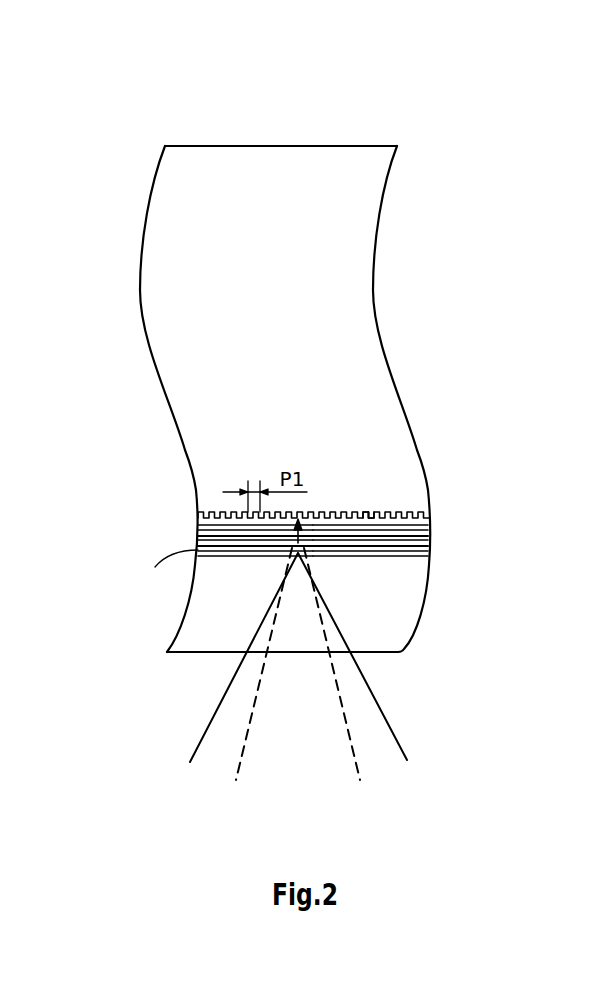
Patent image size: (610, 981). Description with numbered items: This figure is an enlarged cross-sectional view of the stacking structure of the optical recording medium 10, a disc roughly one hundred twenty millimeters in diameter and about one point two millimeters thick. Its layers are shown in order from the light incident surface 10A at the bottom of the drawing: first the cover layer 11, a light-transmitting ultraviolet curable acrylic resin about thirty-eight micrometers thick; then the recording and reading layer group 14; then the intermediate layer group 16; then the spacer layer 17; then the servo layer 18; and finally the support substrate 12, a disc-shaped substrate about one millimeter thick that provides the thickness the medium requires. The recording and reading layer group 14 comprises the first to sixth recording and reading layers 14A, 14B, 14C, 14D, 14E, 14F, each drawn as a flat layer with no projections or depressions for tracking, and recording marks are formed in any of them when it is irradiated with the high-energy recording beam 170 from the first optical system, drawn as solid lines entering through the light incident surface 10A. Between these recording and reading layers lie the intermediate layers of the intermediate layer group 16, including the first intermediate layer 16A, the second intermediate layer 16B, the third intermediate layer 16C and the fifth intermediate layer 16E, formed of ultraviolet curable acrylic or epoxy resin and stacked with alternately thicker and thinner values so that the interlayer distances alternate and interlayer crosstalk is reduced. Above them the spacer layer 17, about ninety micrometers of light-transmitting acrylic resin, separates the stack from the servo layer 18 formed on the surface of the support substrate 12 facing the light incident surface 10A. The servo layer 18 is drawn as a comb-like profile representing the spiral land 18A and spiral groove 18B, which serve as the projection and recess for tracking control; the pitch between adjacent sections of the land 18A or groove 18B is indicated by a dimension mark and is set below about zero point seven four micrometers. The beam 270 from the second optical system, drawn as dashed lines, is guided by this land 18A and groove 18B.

The optical recording medium 10 is at (268, 139).
The light incident surface 10A is at (393, 655).
The cover layer 11 is at (382, 624).
The support substrate 12 is at (333, 271).
The recording and reading layer group 14 is at (521, 465).
The first recording and reading layer 14A is at (430, 511).
The second recording and reading layer 14B is at (430, 519).
The third recording and reading layer 14C is at (430, 528).
The fourth recording and reading layer 14D is at (430, 541).
The fifth recording and reading layer 14E is at (430, 550).
The sixth recording and reading layer 14F is at (430, 557).
The intermediate layer group 16 is at (105, 485).
The first intermediate layer 16A is at (198, 515).
The second intermediate layer 16B is at (198, 528).
The third intermediate layer 16C is at (198, 538).
The fifth intermediate layer 16E is at (198, 558).
The spacer layer 17 is at (197, 508).
The servo layer 18 is at (529, 381).
The land 18A is at (370, 517).
The groove 18B is at (363, 515).
The recording beam 170 is at (400, 748).
The beam 270 is at (336, 688).